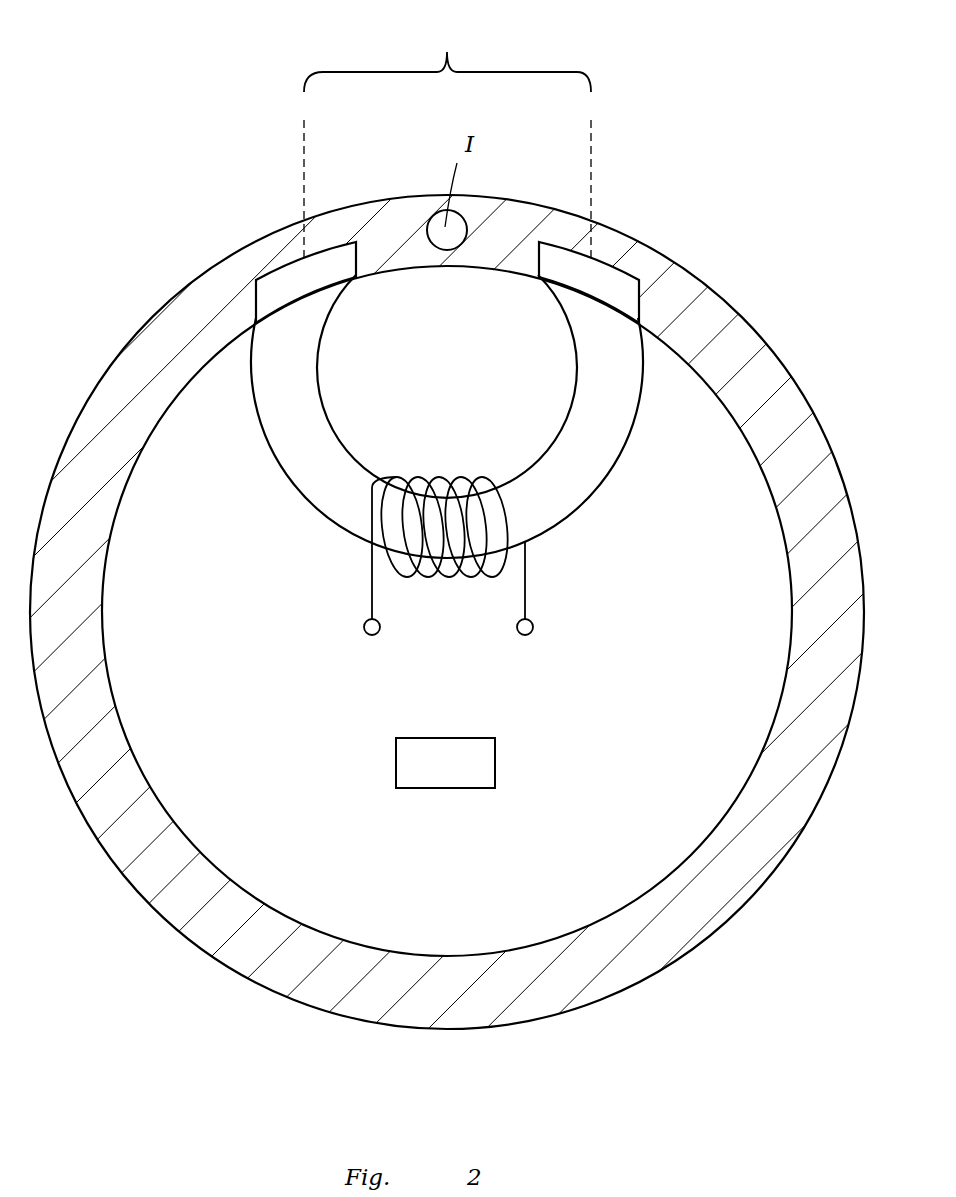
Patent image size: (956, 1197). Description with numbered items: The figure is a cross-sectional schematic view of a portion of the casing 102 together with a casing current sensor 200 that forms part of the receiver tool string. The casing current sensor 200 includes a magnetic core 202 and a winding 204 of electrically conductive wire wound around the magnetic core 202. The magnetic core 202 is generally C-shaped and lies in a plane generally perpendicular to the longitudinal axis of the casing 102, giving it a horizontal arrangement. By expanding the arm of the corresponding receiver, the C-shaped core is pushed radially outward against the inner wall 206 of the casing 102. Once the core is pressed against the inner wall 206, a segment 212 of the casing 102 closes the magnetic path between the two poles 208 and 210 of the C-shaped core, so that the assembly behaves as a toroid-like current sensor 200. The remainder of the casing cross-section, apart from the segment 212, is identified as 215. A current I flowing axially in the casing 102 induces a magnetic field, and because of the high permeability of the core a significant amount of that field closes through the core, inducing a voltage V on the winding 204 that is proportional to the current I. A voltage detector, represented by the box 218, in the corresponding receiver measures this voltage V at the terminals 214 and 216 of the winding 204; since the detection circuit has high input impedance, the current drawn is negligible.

The casing 102 is at (447, 612).
The casing current sensor 200 is at (402, 474).
The magnetic core 202 is at (268, 450).
The winding 204 is at (527, 582).
The inner wall 206 is at (212, 865).
The pole 208 is at (277, 268).
The pole 210 is at (618, 268).
The segment 212 is at (447, 140).
The terminal 214 is at (364, 627).
The remainder of the casing cross-section 215 is at (172, 923).
The terminal 216 is at (533, 627).
The voltage detector 218 is at (499, 755).